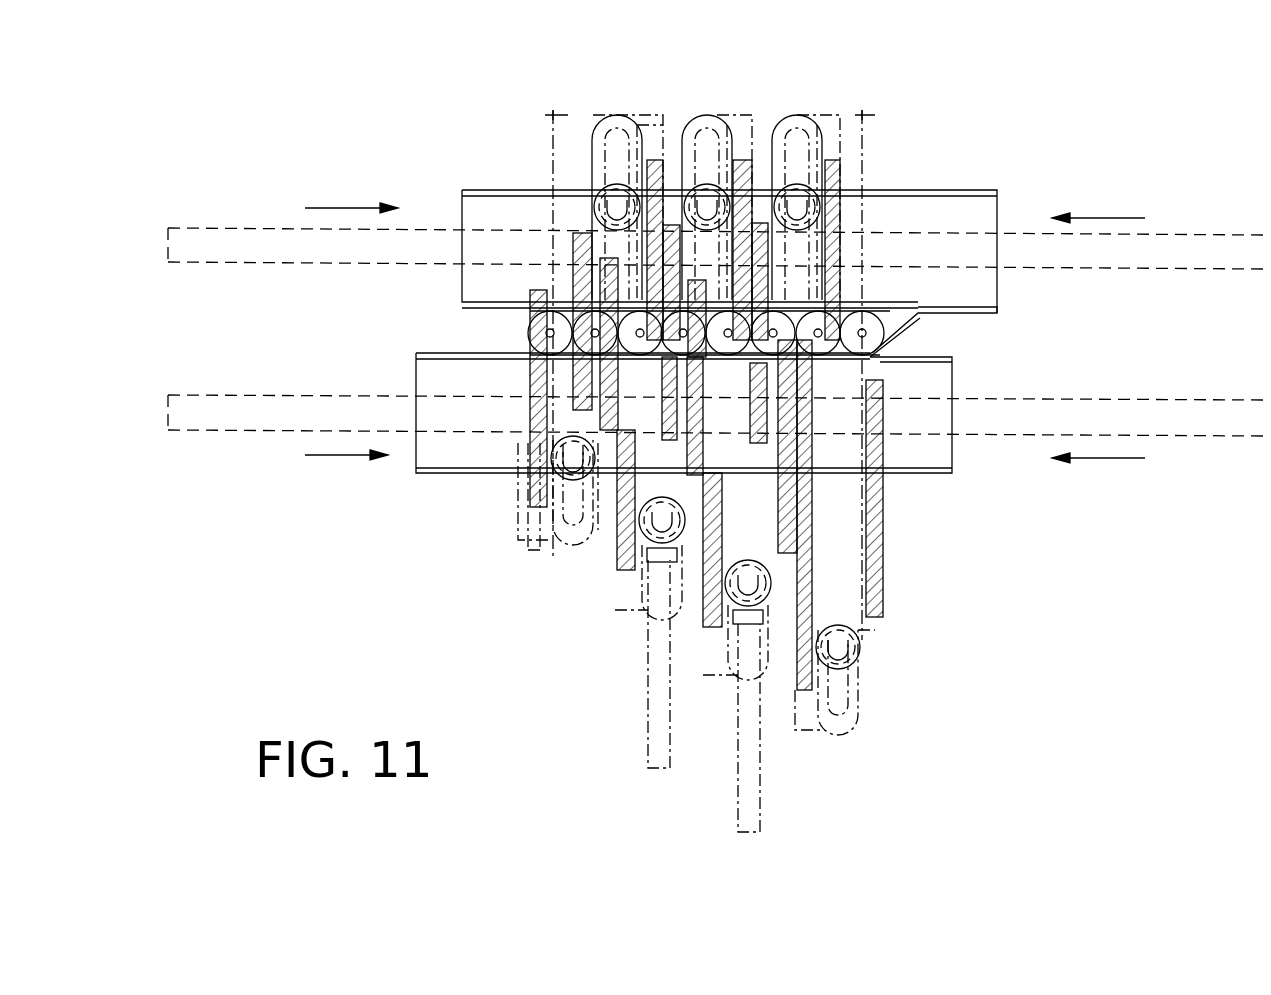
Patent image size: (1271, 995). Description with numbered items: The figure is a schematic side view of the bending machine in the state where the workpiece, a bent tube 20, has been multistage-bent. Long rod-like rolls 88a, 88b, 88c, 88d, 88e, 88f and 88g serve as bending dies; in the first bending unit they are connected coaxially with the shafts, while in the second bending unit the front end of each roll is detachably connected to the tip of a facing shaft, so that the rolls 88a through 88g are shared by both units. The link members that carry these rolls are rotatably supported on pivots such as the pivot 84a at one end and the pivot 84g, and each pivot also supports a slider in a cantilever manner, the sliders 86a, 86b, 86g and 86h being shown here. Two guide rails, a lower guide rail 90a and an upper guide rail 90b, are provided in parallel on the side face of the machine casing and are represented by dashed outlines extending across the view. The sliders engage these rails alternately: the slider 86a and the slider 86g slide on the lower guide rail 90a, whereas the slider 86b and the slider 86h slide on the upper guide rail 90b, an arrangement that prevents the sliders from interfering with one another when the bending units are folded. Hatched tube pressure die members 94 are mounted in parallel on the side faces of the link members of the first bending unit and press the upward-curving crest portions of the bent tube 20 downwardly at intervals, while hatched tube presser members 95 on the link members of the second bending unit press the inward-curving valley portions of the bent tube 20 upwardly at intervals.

The bent tube 20 is at (865, 155).
The pivot 84a is at (535, 316).
The pivot 84g is at (885, 333).
The slider 86a is at (435, 455).
The slider 86b is at (478, 203).
The slider 86g is at (935, 460).
The slider 86h is at (975, 210).
The roll 88a is at (575, 480).
The roll 88b is at (618, 160).
The roll 88c is at (648, 545).
The roll 88d is at (710, 160).
The roll 88e is at (737, 696).
The roll 88f is at (806, 207).
The roll 88g is at (860, 658).
The lower guide rail 90a is at (208, 420).
The upper guide rail 90b is at (208, 235).
The tube pressure die member 94 is at (578, 240).
The tube presser member 95 is at (532, 420).